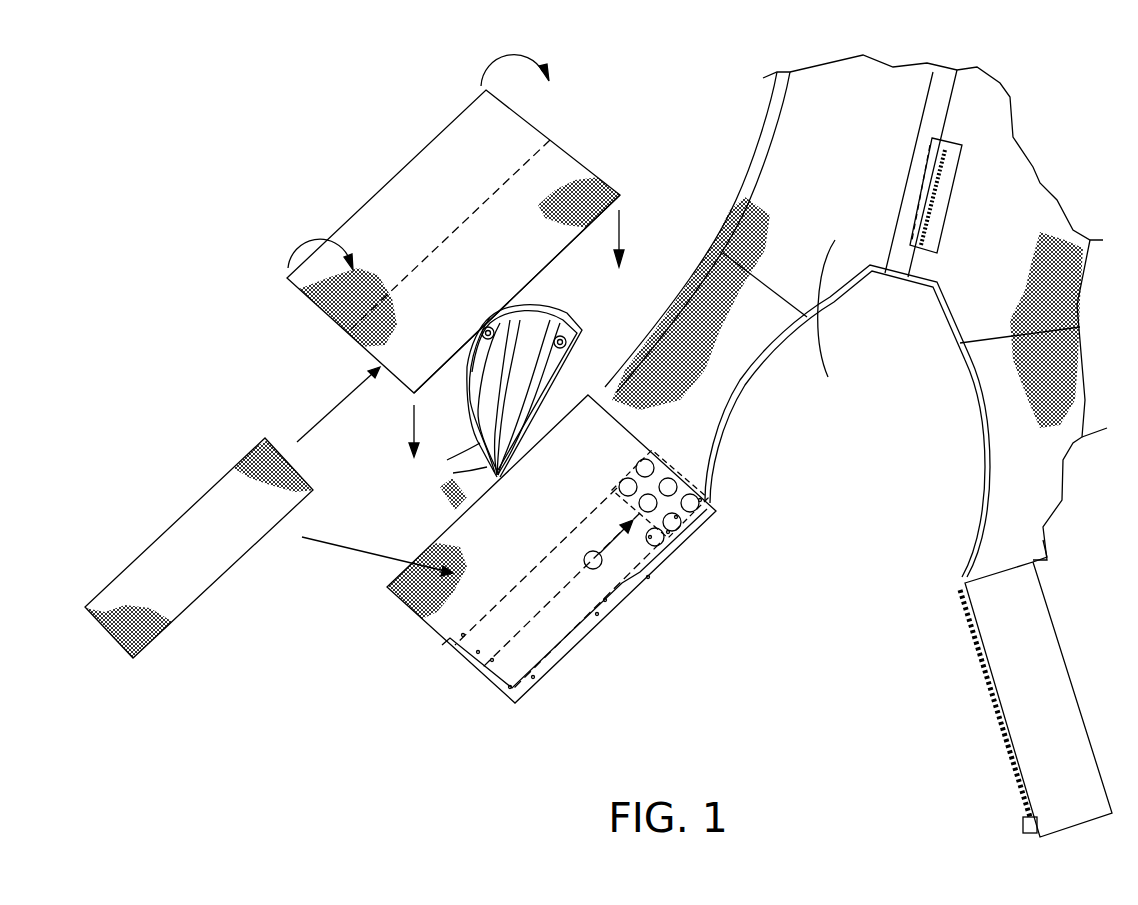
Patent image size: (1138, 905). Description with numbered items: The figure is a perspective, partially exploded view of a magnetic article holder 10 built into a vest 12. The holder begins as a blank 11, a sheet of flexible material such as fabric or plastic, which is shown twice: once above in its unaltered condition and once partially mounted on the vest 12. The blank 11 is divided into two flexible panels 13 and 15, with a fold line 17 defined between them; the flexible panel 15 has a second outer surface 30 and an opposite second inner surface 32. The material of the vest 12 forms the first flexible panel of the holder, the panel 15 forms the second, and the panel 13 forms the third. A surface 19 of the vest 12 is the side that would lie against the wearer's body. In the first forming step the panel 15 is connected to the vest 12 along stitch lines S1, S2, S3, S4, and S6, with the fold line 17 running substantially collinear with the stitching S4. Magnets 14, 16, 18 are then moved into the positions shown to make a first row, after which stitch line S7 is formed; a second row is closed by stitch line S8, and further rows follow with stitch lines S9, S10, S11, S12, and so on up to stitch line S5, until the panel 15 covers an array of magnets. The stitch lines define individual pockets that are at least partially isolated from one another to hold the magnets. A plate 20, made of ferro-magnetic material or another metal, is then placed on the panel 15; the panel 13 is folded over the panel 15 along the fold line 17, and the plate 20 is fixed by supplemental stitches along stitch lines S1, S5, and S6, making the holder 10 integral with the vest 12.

The magnetic article holder 10 is at (300, 212).
The blank 11 is at (383, 158).
The vest 12 is at (804, 196).
The flexible panel 13 is at (463, 184).
The magnet 14 is at (648, 465).
The flexible panel 15 is at (535, 242).
The magnet 16 is at (675, 480).
The fold line 17 is at (423, 257).
The magnet 18 is at (700, 500).
The surface 19 is at (1003, 420).
The plate 20 is at (213, 547).
The second outer surface 30 is at (543, 273).
The second inner surface 32 is at (560, 180).
The stitch line S1 is at (533, 677).
The stitch line S2 is at (492, 660).
The stitch line S3 is at (478, 652).
The stitch line S4 is at (463, 635).
The stitch line S5 is at (510, 687).
The stitch line S6 is at (703, 498).
The stitch line S7 is at (676, 517).
The stitch line S8 is at (668, 532).
The stitch line S9 is at (650, 537).
The stitch line S10 is at (648, 577).
The stitch line S11 is at (605, 600).
The stitch line S12 is at (597, 614).